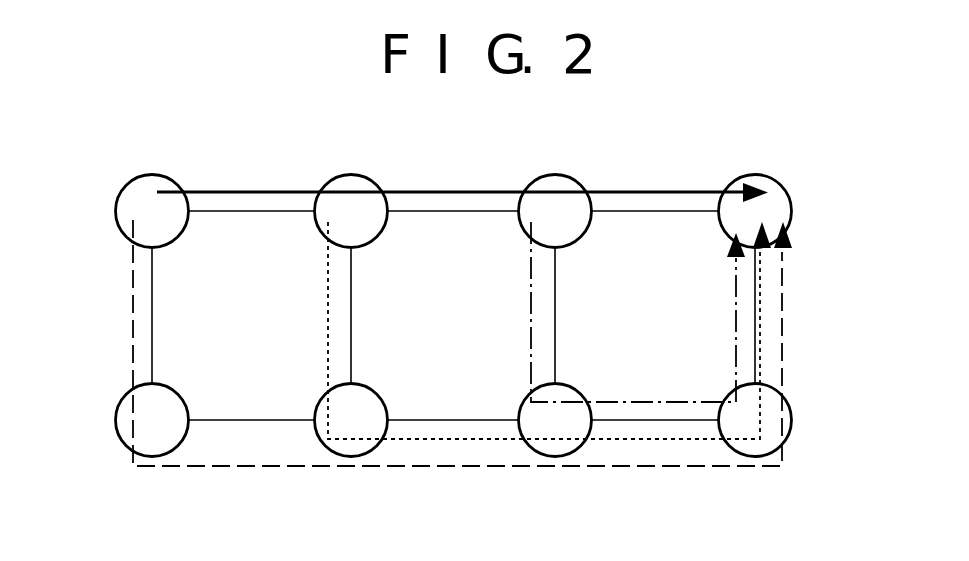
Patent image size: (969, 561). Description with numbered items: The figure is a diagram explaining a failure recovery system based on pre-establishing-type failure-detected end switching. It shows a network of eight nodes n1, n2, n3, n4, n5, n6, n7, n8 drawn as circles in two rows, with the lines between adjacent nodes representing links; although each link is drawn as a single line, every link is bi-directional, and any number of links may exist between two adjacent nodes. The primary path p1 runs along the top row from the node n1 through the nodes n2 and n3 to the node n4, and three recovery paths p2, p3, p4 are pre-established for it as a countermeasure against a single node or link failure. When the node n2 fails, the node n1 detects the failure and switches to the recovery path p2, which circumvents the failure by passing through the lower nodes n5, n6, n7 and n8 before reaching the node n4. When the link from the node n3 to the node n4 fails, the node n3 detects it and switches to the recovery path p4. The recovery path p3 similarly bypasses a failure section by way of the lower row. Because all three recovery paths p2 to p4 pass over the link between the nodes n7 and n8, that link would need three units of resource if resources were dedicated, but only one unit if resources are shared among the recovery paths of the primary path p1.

The node n1 is at (139, 200).
The node n2 is at (339, 201).
The node n3 is at (539, 203).
The node n4 is at (739, 203).
The node n5 is at (136, 425).
The node n6 is at (332, 420).
The node n7 is at (537, 420).
The node n8 is at (772, 420).
The primary path p1 is at (193, 191).
The recovery path p2 is at (310, 469).
The recovery path p3 is at (452, 440).
The recovery path p4 is at (677, 403).